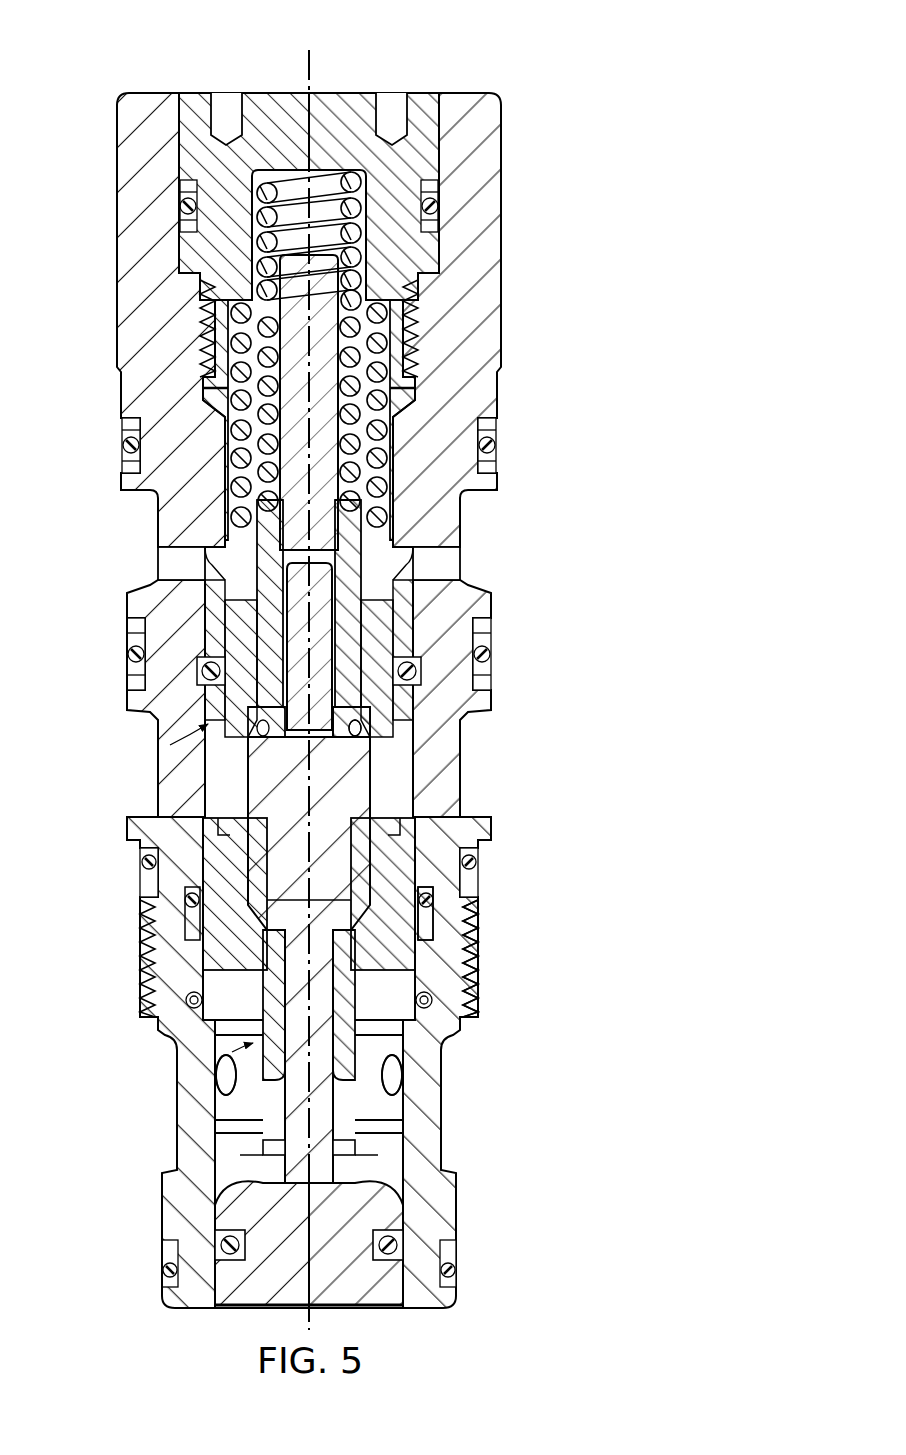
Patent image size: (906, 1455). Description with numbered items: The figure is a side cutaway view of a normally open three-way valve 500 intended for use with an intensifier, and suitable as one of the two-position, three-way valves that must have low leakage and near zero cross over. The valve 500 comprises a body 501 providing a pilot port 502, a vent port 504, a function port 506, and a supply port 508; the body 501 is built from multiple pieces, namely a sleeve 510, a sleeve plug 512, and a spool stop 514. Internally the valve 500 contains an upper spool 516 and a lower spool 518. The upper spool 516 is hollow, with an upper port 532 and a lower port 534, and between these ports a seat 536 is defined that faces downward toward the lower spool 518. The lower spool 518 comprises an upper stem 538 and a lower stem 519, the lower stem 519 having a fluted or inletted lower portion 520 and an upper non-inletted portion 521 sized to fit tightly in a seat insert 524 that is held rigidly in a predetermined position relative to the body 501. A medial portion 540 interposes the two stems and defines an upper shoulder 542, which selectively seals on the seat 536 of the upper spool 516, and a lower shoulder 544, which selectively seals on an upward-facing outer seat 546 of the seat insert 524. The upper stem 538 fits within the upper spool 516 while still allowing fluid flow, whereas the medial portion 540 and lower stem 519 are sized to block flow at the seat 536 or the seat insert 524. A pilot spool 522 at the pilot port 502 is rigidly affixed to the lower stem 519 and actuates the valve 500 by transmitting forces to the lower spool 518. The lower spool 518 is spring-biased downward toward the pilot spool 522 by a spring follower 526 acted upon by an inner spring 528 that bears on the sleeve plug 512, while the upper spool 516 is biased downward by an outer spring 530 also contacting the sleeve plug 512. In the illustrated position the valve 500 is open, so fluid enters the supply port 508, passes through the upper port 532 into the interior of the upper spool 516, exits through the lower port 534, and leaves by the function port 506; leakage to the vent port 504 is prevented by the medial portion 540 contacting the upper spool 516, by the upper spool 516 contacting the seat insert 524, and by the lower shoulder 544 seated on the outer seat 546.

The normally open three-way valve 500 is at (502, 58).
The body 501 is at (506, 193).
The pilot port 502 is at (395, 1300).
The vent port 504 is at (408, 1075).
The function port 506 is at (360, 790).
The supply port 508 is at (450, 562).
The sleeve 510 is at (125, 220).
The sleeve plug 512 is at (355, 96).
The spool stop 514 is at (170, 1190).
The upper spool 516 is at (180, 735).
The lower spool 518 is at (215, 1037).
The lower stem 519 is at (270, 1108).
The fluted or inletted lower portion 520 is at (357, 1012).
The upper non-inletted portion 521 is at (464, 954).
The pilot spool 522 is at (230, 1300).
The seat insert 524 is at (213, 845).
The spring follower 526 is at (245, 560).
The inner spring 528 is at (300, 252).
The outer spring 530 is at (400, 336).
The upper port 532 is at (380, 604).
The lower port 534 is at (410, 736).
The seat 536 is at (152, 716).
The upper stem 538 is at (270, 620).
The medial portion 540 is at (350, 885).
The upper shoulder 542 is at (390, 746).
The lower shoulder 544 is at (350, 912).
The outer seat 546 is at (440, 888).